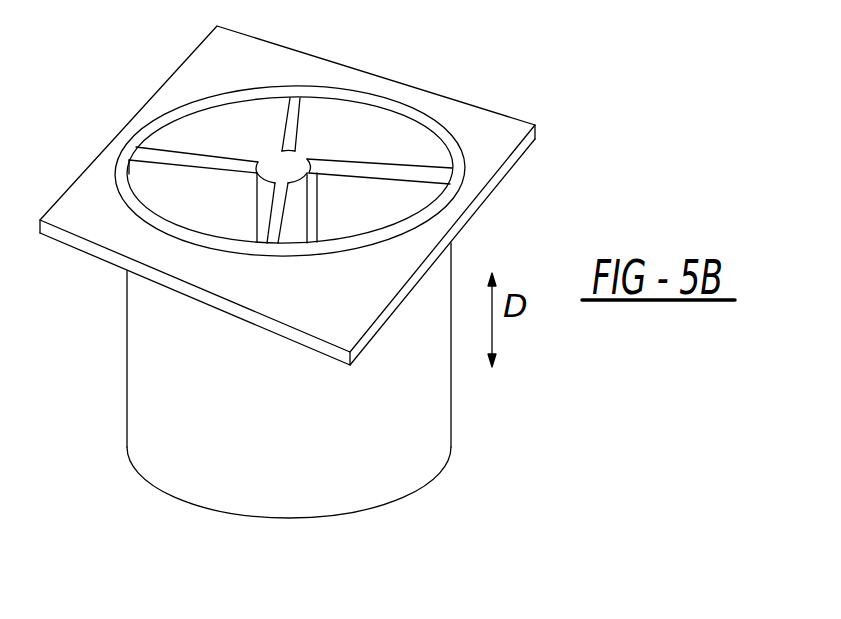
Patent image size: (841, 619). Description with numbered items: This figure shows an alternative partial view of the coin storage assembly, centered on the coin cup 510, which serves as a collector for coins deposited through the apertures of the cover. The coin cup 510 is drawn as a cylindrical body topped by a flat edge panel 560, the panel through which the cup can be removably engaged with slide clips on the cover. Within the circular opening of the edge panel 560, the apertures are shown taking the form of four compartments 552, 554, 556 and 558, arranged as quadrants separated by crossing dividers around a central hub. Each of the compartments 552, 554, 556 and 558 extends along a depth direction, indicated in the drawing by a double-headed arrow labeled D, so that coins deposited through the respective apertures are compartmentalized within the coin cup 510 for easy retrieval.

The coin cup 510 is at (87, 375).
The edge panel 560 is at (205, 68).
The compartment 552 is at (240, 211).
The compartment 554 is at (258, 141).
The compartment 556 is at (390, 146).
The compartment 558 is at (382, 218).